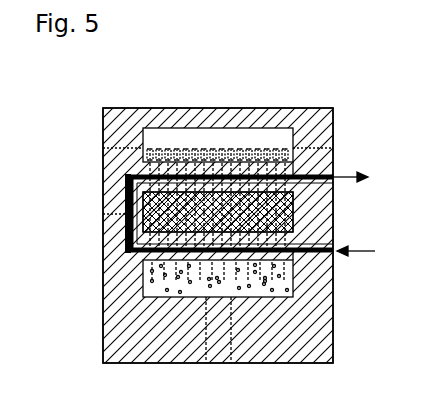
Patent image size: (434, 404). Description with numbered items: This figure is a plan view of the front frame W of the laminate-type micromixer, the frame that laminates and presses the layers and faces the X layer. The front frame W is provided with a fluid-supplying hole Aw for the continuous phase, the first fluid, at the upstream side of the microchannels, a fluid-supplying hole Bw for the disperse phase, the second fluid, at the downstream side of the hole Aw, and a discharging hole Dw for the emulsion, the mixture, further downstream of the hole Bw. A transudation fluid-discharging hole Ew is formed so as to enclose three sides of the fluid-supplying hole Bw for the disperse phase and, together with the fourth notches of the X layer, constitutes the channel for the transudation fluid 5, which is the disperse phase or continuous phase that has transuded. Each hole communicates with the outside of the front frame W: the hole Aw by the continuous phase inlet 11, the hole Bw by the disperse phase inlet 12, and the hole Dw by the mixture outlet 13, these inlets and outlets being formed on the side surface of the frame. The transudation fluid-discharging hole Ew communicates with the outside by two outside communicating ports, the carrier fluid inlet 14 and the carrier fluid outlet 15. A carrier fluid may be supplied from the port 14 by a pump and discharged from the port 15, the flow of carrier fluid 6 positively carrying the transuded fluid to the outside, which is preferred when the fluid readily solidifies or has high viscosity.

The front frame W is at (225, 108).
The fluid-supplying hole for the continuous phase Aw is at (300, 133).
The transudation fluid-discharging hole Ew is at (320, 167).
The fluid-supplying hole for the disperse phase Bw is at (300, 206).
The discharging hole for the emulsion Dw is at (298, 283).
The flow of carrier fluid 6 is at (364, 215).
The carrier fluid outlet 15 is at (335, 180).
The carrier fluid inlet 14 is at (325, 250).
The continuous phase inlet 11 is at (103, 148).
The disperse phase inlet 12 is at (103, 214).
The transudation fluid 5 is at (128, 247).
The mixture outlet 13 is at (218, 363).